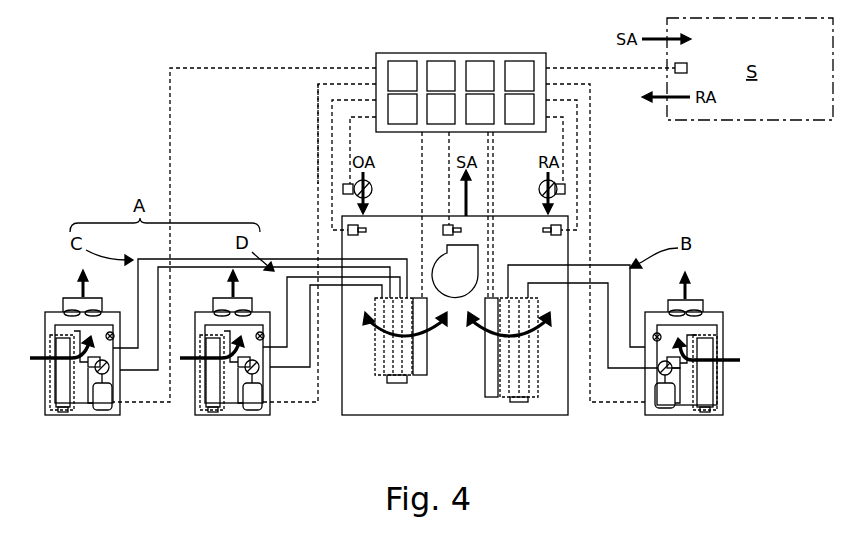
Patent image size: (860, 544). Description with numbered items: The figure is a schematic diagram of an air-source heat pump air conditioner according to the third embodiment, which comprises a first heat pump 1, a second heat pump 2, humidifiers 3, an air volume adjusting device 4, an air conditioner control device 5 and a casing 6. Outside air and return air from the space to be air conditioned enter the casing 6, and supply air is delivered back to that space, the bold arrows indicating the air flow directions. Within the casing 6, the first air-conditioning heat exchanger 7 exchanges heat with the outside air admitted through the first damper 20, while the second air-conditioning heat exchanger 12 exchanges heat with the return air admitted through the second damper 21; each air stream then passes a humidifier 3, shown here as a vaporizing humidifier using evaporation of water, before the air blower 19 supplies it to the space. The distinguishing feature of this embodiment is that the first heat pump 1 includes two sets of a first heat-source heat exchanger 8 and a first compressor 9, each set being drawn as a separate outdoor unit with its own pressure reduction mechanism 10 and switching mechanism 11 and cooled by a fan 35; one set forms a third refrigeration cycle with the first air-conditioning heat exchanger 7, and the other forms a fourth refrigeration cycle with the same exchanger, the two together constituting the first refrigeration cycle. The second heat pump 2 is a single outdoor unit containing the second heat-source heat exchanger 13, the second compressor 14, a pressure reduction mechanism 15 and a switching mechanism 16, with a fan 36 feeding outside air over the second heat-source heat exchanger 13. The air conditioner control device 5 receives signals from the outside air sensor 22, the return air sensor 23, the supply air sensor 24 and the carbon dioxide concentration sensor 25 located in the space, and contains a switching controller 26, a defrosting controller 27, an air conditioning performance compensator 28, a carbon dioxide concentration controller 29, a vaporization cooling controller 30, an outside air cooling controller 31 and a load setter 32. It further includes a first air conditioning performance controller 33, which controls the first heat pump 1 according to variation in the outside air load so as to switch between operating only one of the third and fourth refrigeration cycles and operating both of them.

The first heat pump 1 is at (118, 181).
The second heat pump 2 is at (724, 297).
The humidifier 3 is at (427, 376).
The air volume adjusting device 4 is at (308, 186).
The air conditioner control device 5 is at (553, 48).
The casing 6 is at (342, 252).
The first air-conditioning heat exchanger 7 is at (375, 370).
The first heat-source heat exchanger 8 is at (73, 412).
The first compressor 9 is at (103, 410).
The pressure reduction mechanism 10 is at (113, 333).
The switching mechanism 11 is at (109, 367).
The second air-conditioning heat exchanger 12 is at (568, 412).
The second heat-source heat exchanger 13 is at (698, 412).
The second compressor 14 is at (666, 409).
The pressure reduction mechanism 15 is at (656, 333).
The switching mechanism 16 is at (658, 368).
The air blower 19 is at (440, 262).
The first damper 20 is at (343, 186).
The second damper 21 is at (565, 186).
The outside air sensor 22 is at (348, 229).
The return air sensor 23 is at (562, 229).
The supply air sensor 24 is at (446, 224).
The carbon dioxide concentration sensor 25 is at (688, 64).
The switching controller 26 is at (402, 76).
The defrosting controller 27 is at (402, 109).
The air conditioning performance compensator 28 is at (441, 76).
The carbon dioxide concentration controller 29 is at (441, 109).
The vaporization cooling controller 30 is at (480, 76).
The outside air cooling controller 31 is at (480, 109).
The load setter 32 is at (519, 76).
The first air conditioning performance controller 33 is at (519, 109).
The fan 35 is at (92, 309).
The fan 36 is at (676, 309).